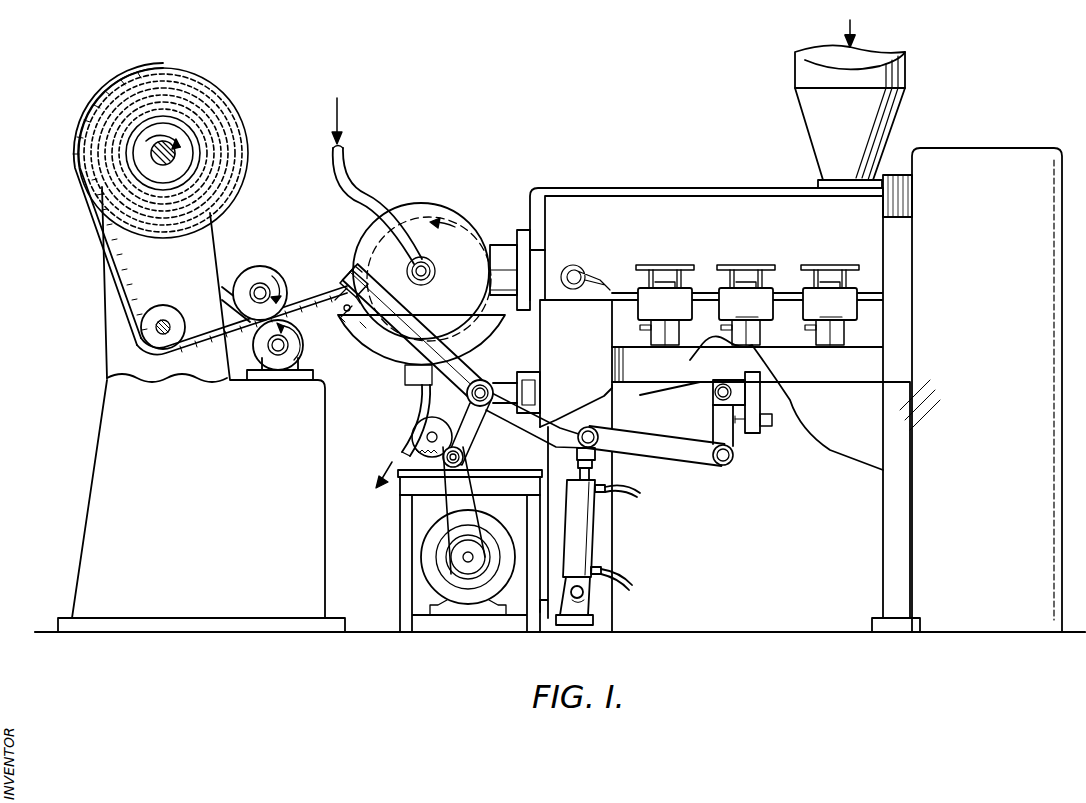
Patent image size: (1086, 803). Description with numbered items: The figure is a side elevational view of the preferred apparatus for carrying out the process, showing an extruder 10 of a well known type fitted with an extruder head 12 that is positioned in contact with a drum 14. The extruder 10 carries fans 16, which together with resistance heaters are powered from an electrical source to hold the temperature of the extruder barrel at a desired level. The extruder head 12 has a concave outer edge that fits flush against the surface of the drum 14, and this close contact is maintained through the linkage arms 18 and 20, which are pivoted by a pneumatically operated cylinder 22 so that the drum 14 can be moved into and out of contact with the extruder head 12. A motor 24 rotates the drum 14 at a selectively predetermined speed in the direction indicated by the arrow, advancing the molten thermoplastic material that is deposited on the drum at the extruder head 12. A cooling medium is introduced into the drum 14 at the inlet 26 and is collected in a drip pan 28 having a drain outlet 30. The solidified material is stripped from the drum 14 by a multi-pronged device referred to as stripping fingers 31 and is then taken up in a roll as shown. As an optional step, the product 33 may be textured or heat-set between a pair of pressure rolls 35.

The extruder 10 is at (640, 187).
The extruder head 12 is at (497, 243).
The drum 14 is at (432, 204).
The fans 16 is at (747, 305).
The linkage arm 18 is at (425, 355).
The linkage arm 20 is at (665, 462).
The pneumatically operated cylinder 22 is at (598, 533).
The motor 24 is at (428, 560).
The inlet 26 is at (345, 178).
The drip pan 28 is at (365, 345).
The drain outlet 30 is at (397, 436).
The stripping fingers 31 is at (342, 290).
The product 33 is at (110, 270).
The pressure rolls 35 is at (264, 262).